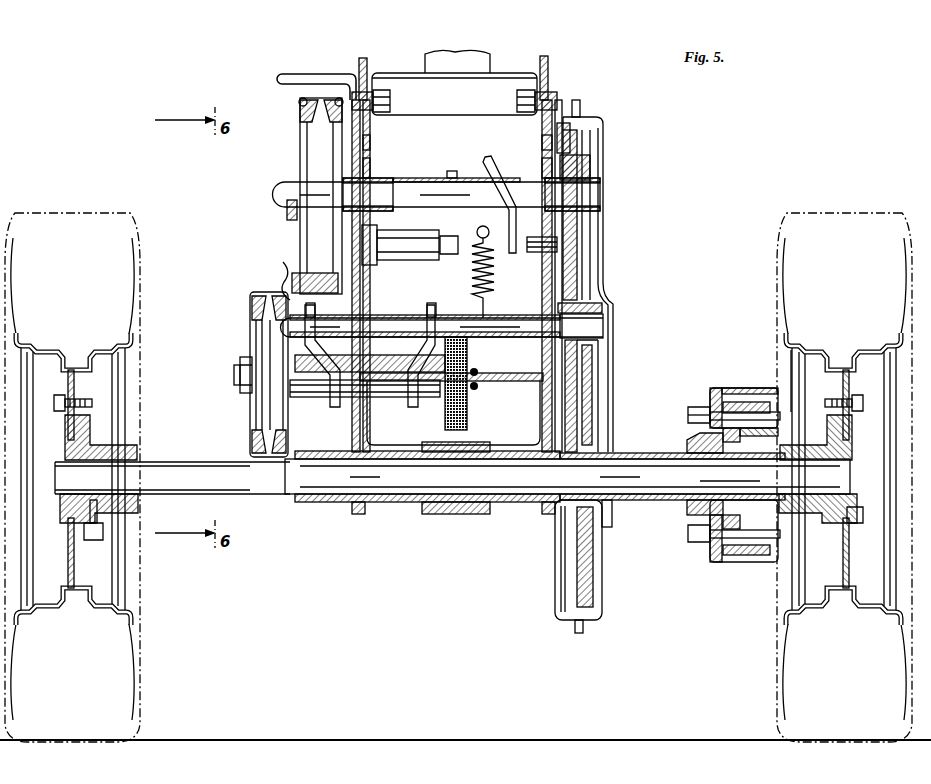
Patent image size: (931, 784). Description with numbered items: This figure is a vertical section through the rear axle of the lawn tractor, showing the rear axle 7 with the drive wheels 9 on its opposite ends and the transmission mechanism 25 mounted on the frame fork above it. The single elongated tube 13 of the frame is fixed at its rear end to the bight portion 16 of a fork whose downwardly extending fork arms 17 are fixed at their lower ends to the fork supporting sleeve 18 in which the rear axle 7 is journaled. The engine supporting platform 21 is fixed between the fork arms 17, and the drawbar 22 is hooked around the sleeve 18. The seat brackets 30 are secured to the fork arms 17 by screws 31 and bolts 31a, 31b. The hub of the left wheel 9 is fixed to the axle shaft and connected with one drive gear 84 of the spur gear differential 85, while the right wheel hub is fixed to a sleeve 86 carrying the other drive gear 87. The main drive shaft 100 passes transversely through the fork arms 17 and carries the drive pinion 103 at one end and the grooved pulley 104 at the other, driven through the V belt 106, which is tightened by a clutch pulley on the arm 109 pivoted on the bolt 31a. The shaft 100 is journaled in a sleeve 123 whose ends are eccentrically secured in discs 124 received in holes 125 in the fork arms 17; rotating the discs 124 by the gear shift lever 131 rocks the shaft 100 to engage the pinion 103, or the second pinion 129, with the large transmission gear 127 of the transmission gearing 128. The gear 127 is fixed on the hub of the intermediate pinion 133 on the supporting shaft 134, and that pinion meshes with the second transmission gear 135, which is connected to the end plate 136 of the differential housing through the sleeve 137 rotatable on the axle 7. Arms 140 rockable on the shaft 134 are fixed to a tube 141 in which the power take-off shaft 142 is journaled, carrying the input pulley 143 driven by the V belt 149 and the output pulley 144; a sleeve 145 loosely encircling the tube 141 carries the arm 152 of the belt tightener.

The rear axle 7 is at (270, 496).
The drive wheels 9 is at (130, 597).
The elongated tube 13 is at (438, 54).
The bight portion 16 is at (458, 108).
The fork arms 17 is at (366, 306).
The fork supporting sleeve 18 is at (397, 503).
The engine supporting platform 21 is at (497, 382).
The drawbar 22 is at (462, 515).
The transmission mechanism 25 is at (246, 228).
The brackets 30 is at (360, 60).
The screws 31 is at (392, 102).
The bolt 31a is at (477, 236).
The bolt 31b is at (527, 248).
The drive gear 84 is at (698, 436).
The spur gear differential 85 is at (724, 382).
The sleeve 86 is at (790, 400).
The drive gear 87 is at (745, 395).
The main drive shaft 100 is at (372, 188).
The drive pinion 103 is at (598, 200).
The grooved pulley 104 is at (300, 129).
The V belt 106 is at (299, 102).
The arm 109 is at (402, 256).
The sleeve 123 is at (424, 184).
The discs 124 is at (368, 166).
The holes 125 is at (368, 148).
The transmission gear 127 is at (580, 264).
The transmission gearing 128 is at (616, 292).
The second pinion 129 is at (590, 158).
The gear shift lever 131 is at (306, 78).
The intermediate pinion 133 is at (603, 310).
The supporting shaft 134 is at (495, 338).
The second transmission gear 135 is at (580, 396).
The end plate 136 is at (712, 555).
The sleeve 137 is at (640, 502).
The arms 140 is at (313, 308).
The tube 141 is at (402, 405).
The power take-off shaft 142 is at (238, 380).
The input pulley 143 is at (250, 429).
The output pulley 144 is at (468, 424).
The sleeve 145 is at (315, 405).
The V belt 149 is at (266, 298).
The arm 152 is at (283, 272).